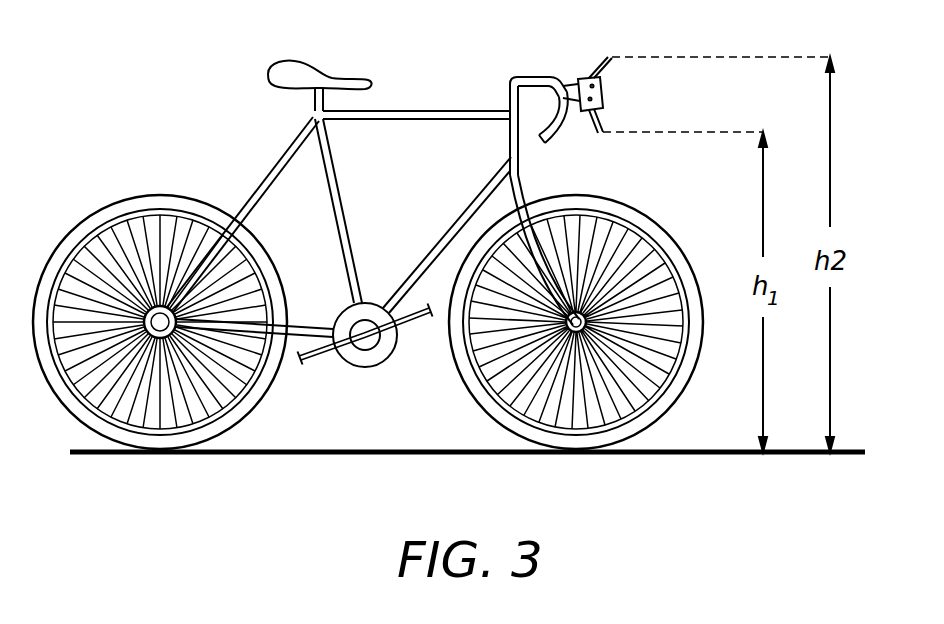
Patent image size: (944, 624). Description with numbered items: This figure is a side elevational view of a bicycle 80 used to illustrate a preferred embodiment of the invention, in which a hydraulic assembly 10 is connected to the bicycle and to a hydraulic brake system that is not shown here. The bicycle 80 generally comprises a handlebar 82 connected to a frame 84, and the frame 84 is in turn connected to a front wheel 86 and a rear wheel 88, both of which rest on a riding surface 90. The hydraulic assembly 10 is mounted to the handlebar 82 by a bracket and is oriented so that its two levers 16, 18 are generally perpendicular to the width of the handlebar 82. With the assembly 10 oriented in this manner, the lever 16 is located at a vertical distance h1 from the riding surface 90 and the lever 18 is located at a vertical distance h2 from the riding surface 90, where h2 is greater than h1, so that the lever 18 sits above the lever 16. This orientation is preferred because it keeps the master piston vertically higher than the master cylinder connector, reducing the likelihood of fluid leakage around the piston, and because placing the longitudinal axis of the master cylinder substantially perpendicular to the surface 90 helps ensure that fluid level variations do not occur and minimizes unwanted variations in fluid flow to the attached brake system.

The hydraulic assembly 10 is at (617, 94).
The lever 16 is at (600, 133).
The lever 18 is at (607, 55).
The bicycle 80 is at (268, 77).
The handlebar 82 is at (522, 75).
The frame 84 is at (418, 110).
The front wheel 86 is at (651, 217).
The rear wheel 88 is at (72, 232).
The riding surface 90 is at (708, 456).